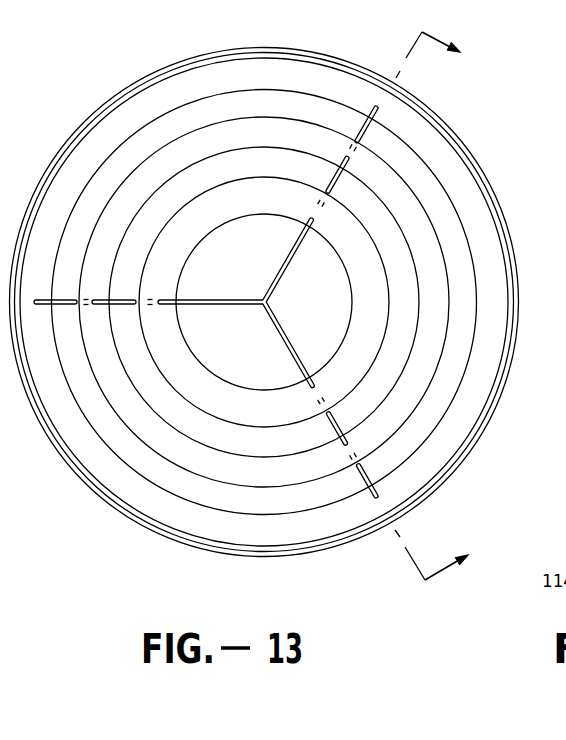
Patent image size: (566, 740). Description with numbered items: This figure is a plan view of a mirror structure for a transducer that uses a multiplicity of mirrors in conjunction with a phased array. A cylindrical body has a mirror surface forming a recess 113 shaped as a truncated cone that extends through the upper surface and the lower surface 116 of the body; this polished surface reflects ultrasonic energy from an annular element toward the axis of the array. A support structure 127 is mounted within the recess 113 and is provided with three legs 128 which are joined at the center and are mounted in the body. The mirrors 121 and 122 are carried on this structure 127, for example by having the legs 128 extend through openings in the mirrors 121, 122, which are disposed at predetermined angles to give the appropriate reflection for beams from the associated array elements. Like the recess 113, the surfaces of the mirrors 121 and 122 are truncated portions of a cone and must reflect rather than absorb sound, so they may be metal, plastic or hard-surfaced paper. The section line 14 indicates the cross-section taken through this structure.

The section line 14- 14 is at (448, 306).
The recess 113 is at (465, 428).
The lower surface 116 is at (457, 463).
The mirror 121 is at (422, 380).
The mirror 122 is at (243, 408).
The support structure 127 is at (350, 185).
The legs 128 is at (275, 322).